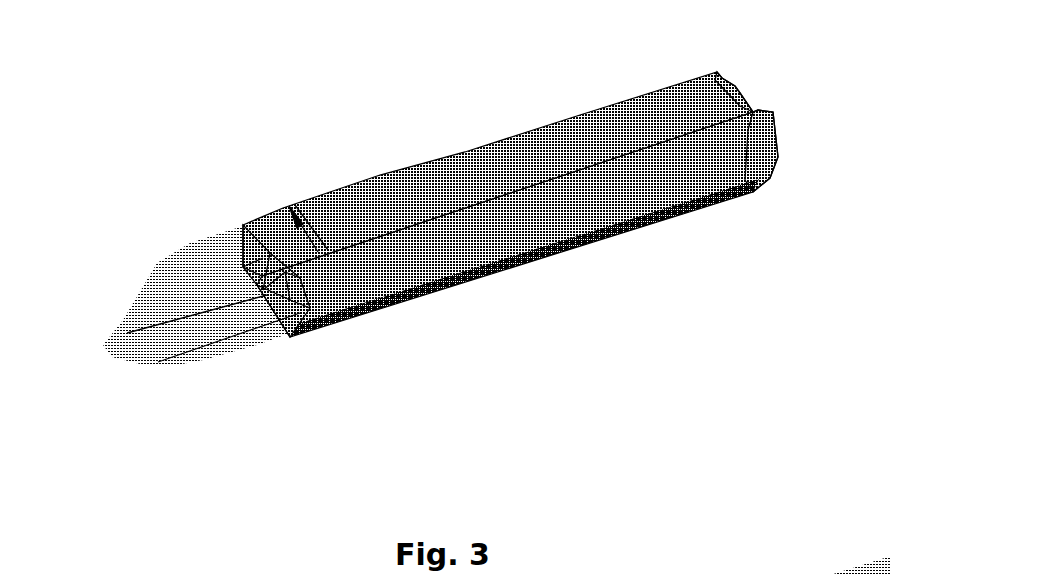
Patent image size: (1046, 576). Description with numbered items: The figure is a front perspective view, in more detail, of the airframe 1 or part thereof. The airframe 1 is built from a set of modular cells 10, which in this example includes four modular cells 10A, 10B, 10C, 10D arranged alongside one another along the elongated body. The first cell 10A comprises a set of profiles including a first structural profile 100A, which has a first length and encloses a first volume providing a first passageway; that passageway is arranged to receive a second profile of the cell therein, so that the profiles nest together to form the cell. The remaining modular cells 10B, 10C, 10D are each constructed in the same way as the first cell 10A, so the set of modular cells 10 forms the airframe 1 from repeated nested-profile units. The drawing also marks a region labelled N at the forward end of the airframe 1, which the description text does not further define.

The airframe 1 is at (453, 250).
The set of modular cells 10 is at (537, 217).
The first cell 10A is at (422, 304).
The modular cell 10B is at (473, 142).
The modular cell 10C is at (740, 209).
The modular cell 10D is at (731, 65).
The first structural profile 100A is at (588, 240).
The needle tip N is at (159, 254).